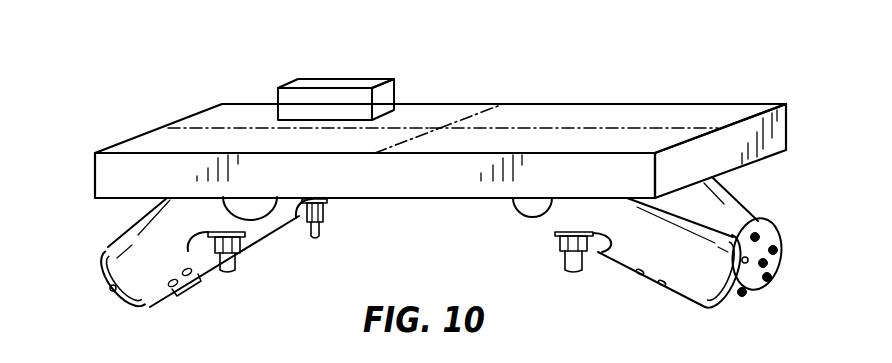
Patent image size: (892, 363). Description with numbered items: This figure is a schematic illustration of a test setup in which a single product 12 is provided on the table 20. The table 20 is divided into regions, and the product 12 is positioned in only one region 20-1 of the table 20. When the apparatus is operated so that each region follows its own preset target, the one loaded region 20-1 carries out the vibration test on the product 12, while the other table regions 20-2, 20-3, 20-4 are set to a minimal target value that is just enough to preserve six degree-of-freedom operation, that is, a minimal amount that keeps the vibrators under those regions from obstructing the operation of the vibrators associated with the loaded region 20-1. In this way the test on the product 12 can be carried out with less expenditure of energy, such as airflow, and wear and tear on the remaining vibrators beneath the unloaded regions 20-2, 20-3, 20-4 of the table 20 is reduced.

The product 12 is at (333, 82).
The table 20 is at (93, 170).
The region 20-1 is at (218, 110).
The table region 20-2 is at (665, 110).
The table region 20-3 is at (146, 143).
The table region 20-4 is at (580, 143).